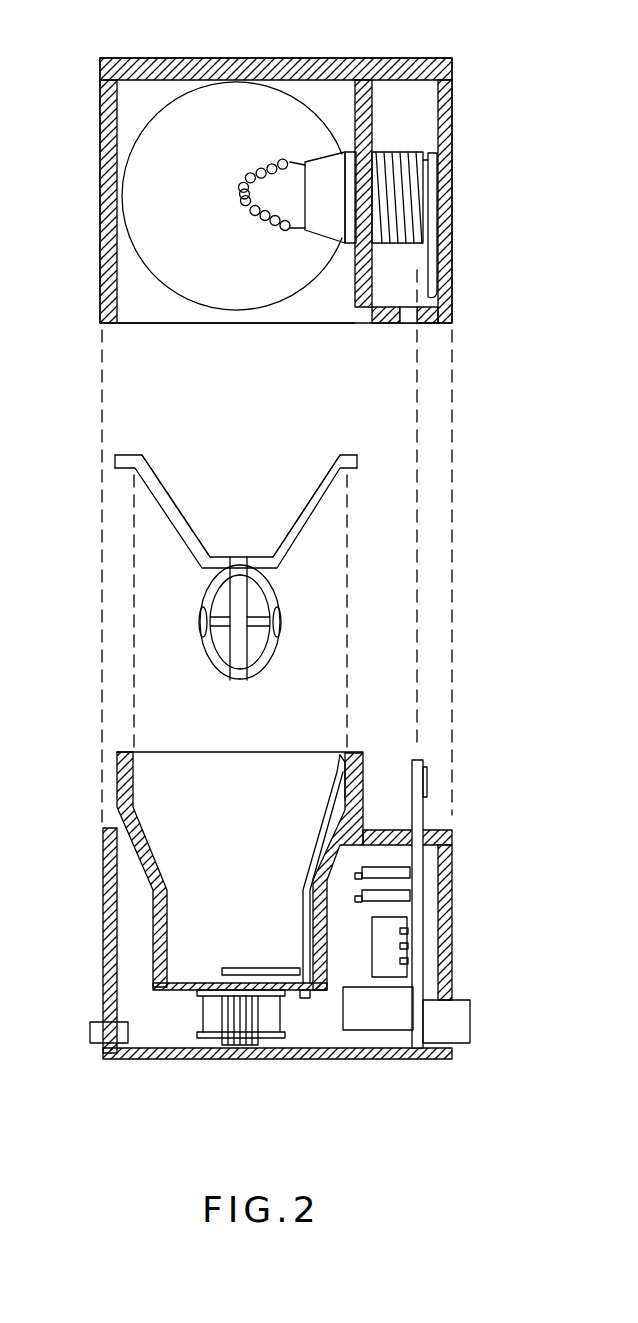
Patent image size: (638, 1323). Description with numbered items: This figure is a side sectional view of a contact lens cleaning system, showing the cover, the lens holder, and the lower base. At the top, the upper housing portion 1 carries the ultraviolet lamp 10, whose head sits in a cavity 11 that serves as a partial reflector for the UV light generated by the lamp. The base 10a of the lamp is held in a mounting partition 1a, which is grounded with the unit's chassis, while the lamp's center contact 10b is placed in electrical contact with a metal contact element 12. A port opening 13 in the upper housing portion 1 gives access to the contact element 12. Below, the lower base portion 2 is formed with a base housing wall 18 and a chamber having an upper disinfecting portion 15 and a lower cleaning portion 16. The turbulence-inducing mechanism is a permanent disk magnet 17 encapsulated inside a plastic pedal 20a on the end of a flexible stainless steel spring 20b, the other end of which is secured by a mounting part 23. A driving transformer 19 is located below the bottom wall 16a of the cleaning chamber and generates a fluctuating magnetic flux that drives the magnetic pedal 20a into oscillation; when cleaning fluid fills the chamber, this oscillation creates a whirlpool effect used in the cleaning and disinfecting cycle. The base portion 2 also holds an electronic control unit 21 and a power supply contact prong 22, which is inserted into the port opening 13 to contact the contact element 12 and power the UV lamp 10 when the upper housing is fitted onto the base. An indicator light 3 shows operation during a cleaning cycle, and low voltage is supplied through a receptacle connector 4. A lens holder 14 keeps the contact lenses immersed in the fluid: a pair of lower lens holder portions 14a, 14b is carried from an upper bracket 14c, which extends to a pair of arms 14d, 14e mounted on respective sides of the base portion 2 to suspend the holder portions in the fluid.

The upper housing portion 1 is at (443, 63).
The mounting partition 1a is at (378, 97).
The lower base portion 2 is at (104, 933).
The indicator light 3 is at (90, 1033).
The receptacle connector 4 is at (470, 1013).
The ultraviolet lamp 10 is at (155, 190).
The base of the lamp 10a is at (398, 148).
The center contact 10b is at (446, 172).
The cavity 11 is at (127, 101).
The metal contact element 12 is at (447, 285).
The port opening 13 is at (410, 328).
The lens holder 14 is at (197, 553).
The lower lens holder portion 14a is at (202, 645).
The lower lens holder portion 14b is at (267, 652).
The upper bracket 14c is at (210, 547).
The arm 14d is at (170, 503).
The arm 14e is at (312, 497).
The upper disinfecting portion 15 is at (237, 775).
The lower cleaning portion 16 is at (215, 887).
The bottom wall 16a is at (182, 991).
The permanent disk magnet 17 is at (250, 954).
The base housing wall 18 is at (155, 1059).
The driving transformer 19 is at (268, 1022).
The plastic pedal 20a is at (298, 992).
The flexible stainless steel spring 20b is at (306, 862).
The electronic control unit 21 is at (391, 967).
The power supply contact prong 22 is at (428, 787).
The mounting part 23 is at (355, 765).